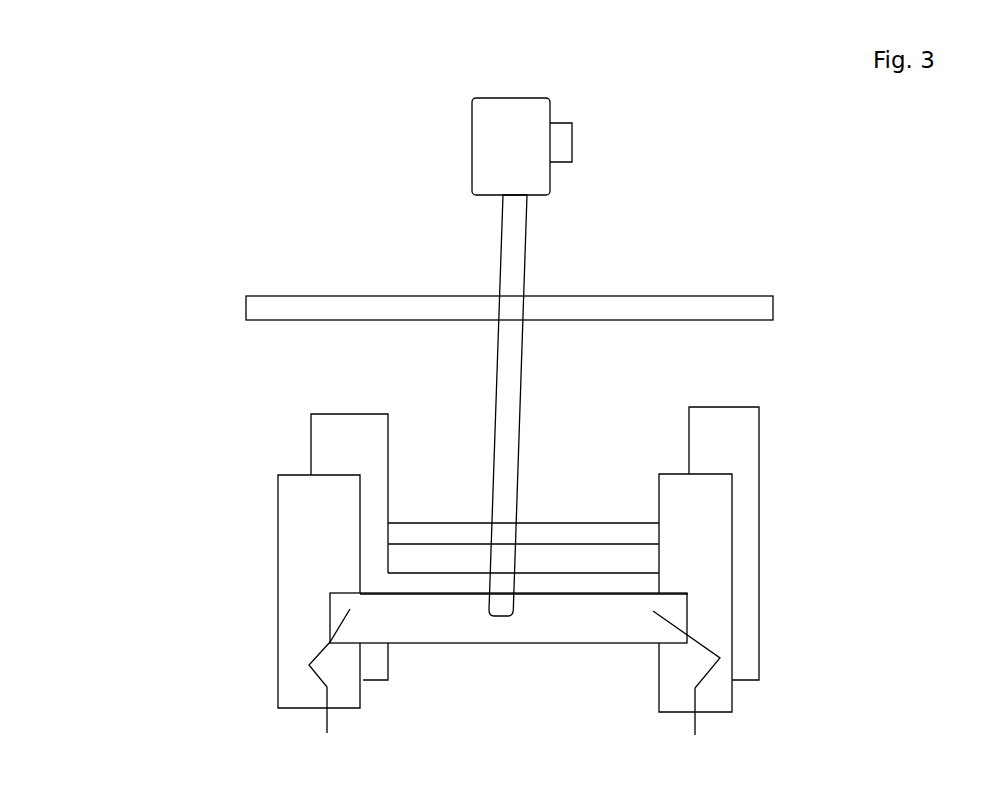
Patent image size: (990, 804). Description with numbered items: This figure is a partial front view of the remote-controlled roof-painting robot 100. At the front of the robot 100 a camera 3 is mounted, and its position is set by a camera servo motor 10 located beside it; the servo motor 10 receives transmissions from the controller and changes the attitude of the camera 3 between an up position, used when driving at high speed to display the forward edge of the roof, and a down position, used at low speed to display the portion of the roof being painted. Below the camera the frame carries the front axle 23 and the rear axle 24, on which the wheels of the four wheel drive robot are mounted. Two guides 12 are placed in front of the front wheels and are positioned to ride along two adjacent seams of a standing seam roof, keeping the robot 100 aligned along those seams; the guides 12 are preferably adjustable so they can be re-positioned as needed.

The robot 100 is at (196, 208).
The camera 3 is at (510, 173).
The camera servo motor 10 is at (565, 138).
The rear axle 24 is at (433, 532).
The front axle 23 is at (428, 583).
The guides 12 is at (687, 727).